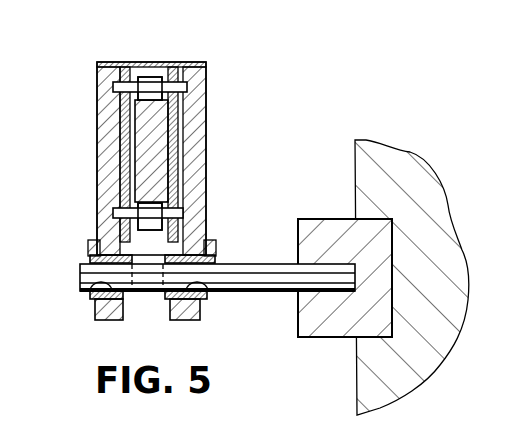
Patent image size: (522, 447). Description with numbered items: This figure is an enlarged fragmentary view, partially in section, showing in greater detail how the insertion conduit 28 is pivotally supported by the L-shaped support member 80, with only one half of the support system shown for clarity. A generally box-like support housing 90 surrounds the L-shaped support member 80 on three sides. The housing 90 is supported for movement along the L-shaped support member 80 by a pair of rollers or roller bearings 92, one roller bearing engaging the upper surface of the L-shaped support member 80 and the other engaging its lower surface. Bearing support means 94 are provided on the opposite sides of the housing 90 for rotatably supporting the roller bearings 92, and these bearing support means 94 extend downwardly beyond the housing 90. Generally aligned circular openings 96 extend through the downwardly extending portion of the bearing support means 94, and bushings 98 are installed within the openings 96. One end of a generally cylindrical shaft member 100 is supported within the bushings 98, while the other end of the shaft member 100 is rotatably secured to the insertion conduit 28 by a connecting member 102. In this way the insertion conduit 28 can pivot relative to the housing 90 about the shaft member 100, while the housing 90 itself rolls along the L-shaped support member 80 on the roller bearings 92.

The insertion conduit 28 is at (366, 365).
The L-shaped support member 80 is at (152, 138).
The support housing 90 is at (110, 129).
The roller bearings 92 is at (150, 82).
The bearing support means 94 is at (108, 158).
The circular openings 96 is at (88, 298).
The bushings 98 is at (90, 247).
The shaft member 100 is at (268, 292).
The connecting member 102 is at (333, 219).